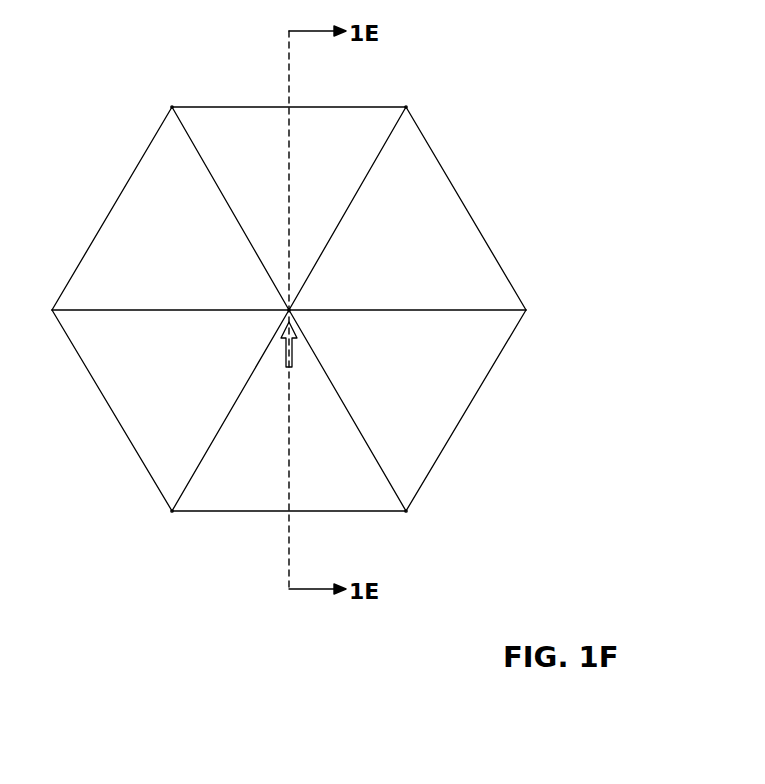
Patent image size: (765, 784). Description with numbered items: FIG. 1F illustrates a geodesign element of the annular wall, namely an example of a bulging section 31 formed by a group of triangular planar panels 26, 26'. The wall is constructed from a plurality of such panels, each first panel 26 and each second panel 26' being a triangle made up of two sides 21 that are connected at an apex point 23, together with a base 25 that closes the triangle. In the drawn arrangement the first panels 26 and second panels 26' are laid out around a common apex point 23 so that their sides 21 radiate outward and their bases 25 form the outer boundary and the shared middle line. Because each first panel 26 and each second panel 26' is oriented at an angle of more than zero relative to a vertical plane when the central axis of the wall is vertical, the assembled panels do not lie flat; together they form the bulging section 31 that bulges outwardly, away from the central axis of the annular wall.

The sides 21 is at (216, 160).
The apex point 23 is at (172, 107).
The base 25 is at (258, 107).
The first panel 26 is at (289, 208).
The second panel 26' is at (289, 410).
The bulging section 31 is at (484, 124).